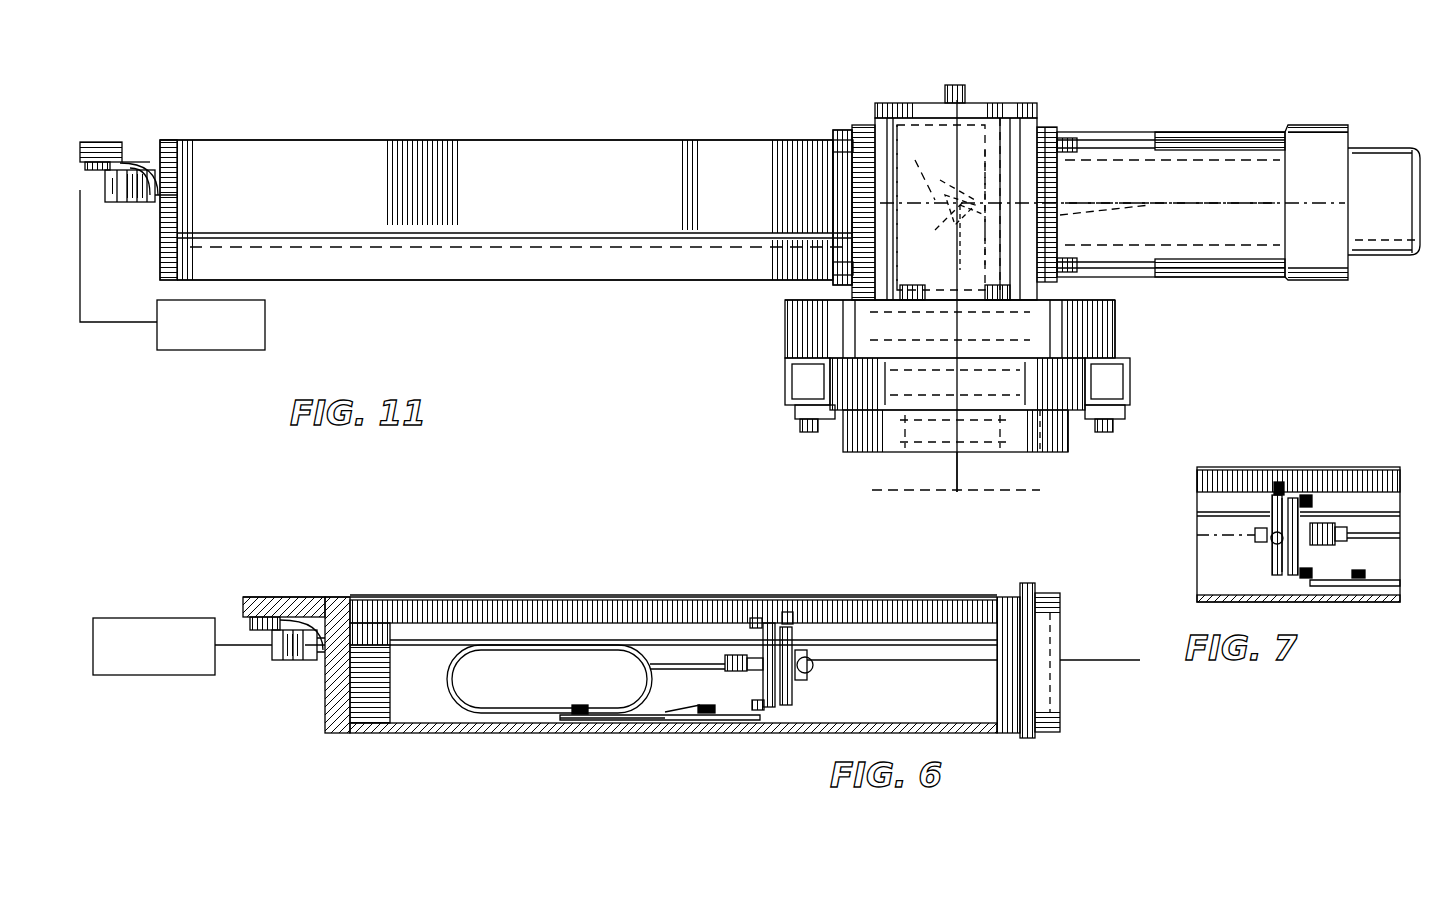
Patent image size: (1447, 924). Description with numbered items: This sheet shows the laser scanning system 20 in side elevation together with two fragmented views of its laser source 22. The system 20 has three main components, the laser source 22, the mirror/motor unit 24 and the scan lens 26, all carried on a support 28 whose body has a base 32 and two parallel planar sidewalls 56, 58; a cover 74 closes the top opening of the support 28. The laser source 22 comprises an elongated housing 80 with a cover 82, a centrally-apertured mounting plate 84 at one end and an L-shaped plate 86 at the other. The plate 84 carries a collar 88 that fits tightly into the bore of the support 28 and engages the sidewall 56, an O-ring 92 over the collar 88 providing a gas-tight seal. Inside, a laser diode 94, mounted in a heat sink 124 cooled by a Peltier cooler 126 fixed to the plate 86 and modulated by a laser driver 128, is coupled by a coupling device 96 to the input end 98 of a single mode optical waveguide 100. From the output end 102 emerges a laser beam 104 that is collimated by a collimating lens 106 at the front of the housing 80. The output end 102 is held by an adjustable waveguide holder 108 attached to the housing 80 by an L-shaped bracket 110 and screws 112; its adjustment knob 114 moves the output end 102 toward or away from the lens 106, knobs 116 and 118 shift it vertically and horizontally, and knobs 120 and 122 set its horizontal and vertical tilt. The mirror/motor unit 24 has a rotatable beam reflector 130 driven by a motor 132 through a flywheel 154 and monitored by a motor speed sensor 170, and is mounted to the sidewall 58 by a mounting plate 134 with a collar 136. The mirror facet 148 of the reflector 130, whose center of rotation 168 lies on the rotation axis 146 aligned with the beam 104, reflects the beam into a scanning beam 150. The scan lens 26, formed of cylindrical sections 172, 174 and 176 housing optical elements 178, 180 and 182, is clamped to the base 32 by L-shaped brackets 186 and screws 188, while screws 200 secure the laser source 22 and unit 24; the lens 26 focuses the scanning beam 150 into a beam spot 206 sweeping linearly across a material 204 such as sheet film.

In FIG. 11, the laser scanning system 20 is at (861, 84).
In FIG. 11, the laser source 22 is at (545, 136).
In FIG. 6, the laser source 22 is at (511, 578).
In FIG. 7, the laser source 22 is at (1331, 462).
In FIG. 11, the mirror/motor unit 24 is at (1198, 128).
In FIG. 11, the scan lens 26 is at (838, 456).
In FIG. 11, the support 28 is at (1130, 345).
In FIG. 11, the base 32 is at (1115, 316).
In FIG. 11, the sidewall 56 is at (855, 128).
In FIG. 11, the sidewall 58 is at (1047, 125).
In FIG. 11, the cover 74 is at (905, 103).
In FIG. 11, the housing 80 is at (517, 281).
In FIG. 6, the housing 80 is at (635, 734).
In FIG. 7, the housing 80 is at (1200, 596).
In FIG. 11, the cover 82 is at (615, 138).
In FIG. 6, the cover 82 is at (592, 596).
In FIG. 11, the mounting plate 84 is at (855, 205).
In FIG. 6, the mounting plate 84 is at (1012, 597).
In FIG. 11, the L-shaped plate 86 is at (170, 140).
In FIG. 6, the L-shaped plate 86 is at (340, 734).
In FIG. 11, the collar 88 is at (765, 162).
In FIG. 6, the collar 88 is at (1036, 598).
In FIG. 6, the O-ring 92 is at (1062, 693).
In FIG. 11, the laser diode 94 is at (120, 203).
In FIG. 6, the laser diode 94 is at (273, 648).
In FIG. 11, the coupling device 96 is at (133, 203).
In FIG. 6, the coupling device 96 is at (296, 660).
In FIG. 11, the input end 98 is at (160, 193).
In FIG. 6, the input end 98 is at (320, 660).
In FIG. 6, the single mode optical waveguide 100 is at (447, 650).
In FIG. 7, the single mode optical waveguide 100 is at (1400, 520).
In FIG. 6, the output end 102 is at (812, 665).
In FIG. 7, the output end 102 is at (1255, 535).
In FIG. 11, the laser beam 104 is at (919, 207).
In FIG. 6, the laser beam 104 is at (945, 665).
In FIG. 6, the collimating lens 106 is at (1060, 630).
In FIG. 6, the adjustable waveguide holder 108 is at (794, 613).
In FIG. 7, the adjustable waveguide holder 108 is at (1268, 492).
In FIG. 6, the L-shaped bracket 110 is at (700, 721).
In FIG. 7, the L-shaped bracket 110 is at (1400, 580).
In FIG. 6, the screws 112 is at (696, 705).
In FIG. 7, the screws 112 is at (1365, 572).
In FIG. 6, the adjustment knob 114 is at (738, 655).
In FIG. 7, the adjustment knob 114 is at (1340, 524).
In FIG. 6, the adjustment knob 116 is at (787, 612).
In FIG. 7, the adjustment knob 116 is at (1278, 482).
In FIG. 7, the adjustment knob 118 is at (1270, 543).
In FIG. 6, the adjustment knob 120 is at (755, 618).
In FIG. 7, the adjustment knob 120 is at (1312, 497).
In FIG. 6, the adjustment knob 122 is at (758, 710).
In FIG. 7, the adjustment knob 122 is at (1312, 575).
In FIG. 11, the heat sink 124 is at (150, 168).
In FIG. 6, the heat sink 124 is at (282, 658).
In FIG. 11, the Peltier cooler 126 is at (82, 142).
In FIG. 6, the Peltier cooler 126 is at (250, 615).
In FIG. 11, the laser driver 128 is at (268, 338).
In FIG. 6, the laser driver 128 is at (158, 678).
In FIG. 11, the beam reflector 130 is at (948, 192).
In FIG. 11, the motor 132 is at (1255, 132).
In FIG. 11, the mounting plate 134 is at (1050, 128).
In FIG. 11, the collar 136 is at (1148, 203).
In FIG. 11, the central longitudinal axis 146 is at (1110, 205).
In FIG. 11, the mirror facet 148 is at (955, 228).
In FIG. 11, the scanning beam 150 is at (950, 286).
In FIG. 11, the flywheel 154 is at (1002, 116).
In FIG. 11, the center of rotation 168 is at (957, 206).
In FIG. 11, the motor speed sensor 170 is at (1385, 155).
In FIG. 11, the cylindrical section 172 is at (785, 320).
In FIG. 11, the cylindrical section 174 is at (800, 415).
In FIG. 11, the cylindrical section 176 is at (1068, 454).
In FIG. 11, the optical element 178 is at (785, 348).
In FIG. 11, the optical element 180 is at (790, 380).
In FIG. 11, the optical element 182 is at (1078, 432).
In FIG. 11, the L-shaped brackets 186 is at (790, 398).
In FIG. 11, the screws 188 is at (805, 434).
In FIG. 11, the screws 200 is at (958, 85).
In FIG. 11, the material 204 is at (1040, 490).
In FIG. 11, the focused beam spot 206 is at (960, 490).